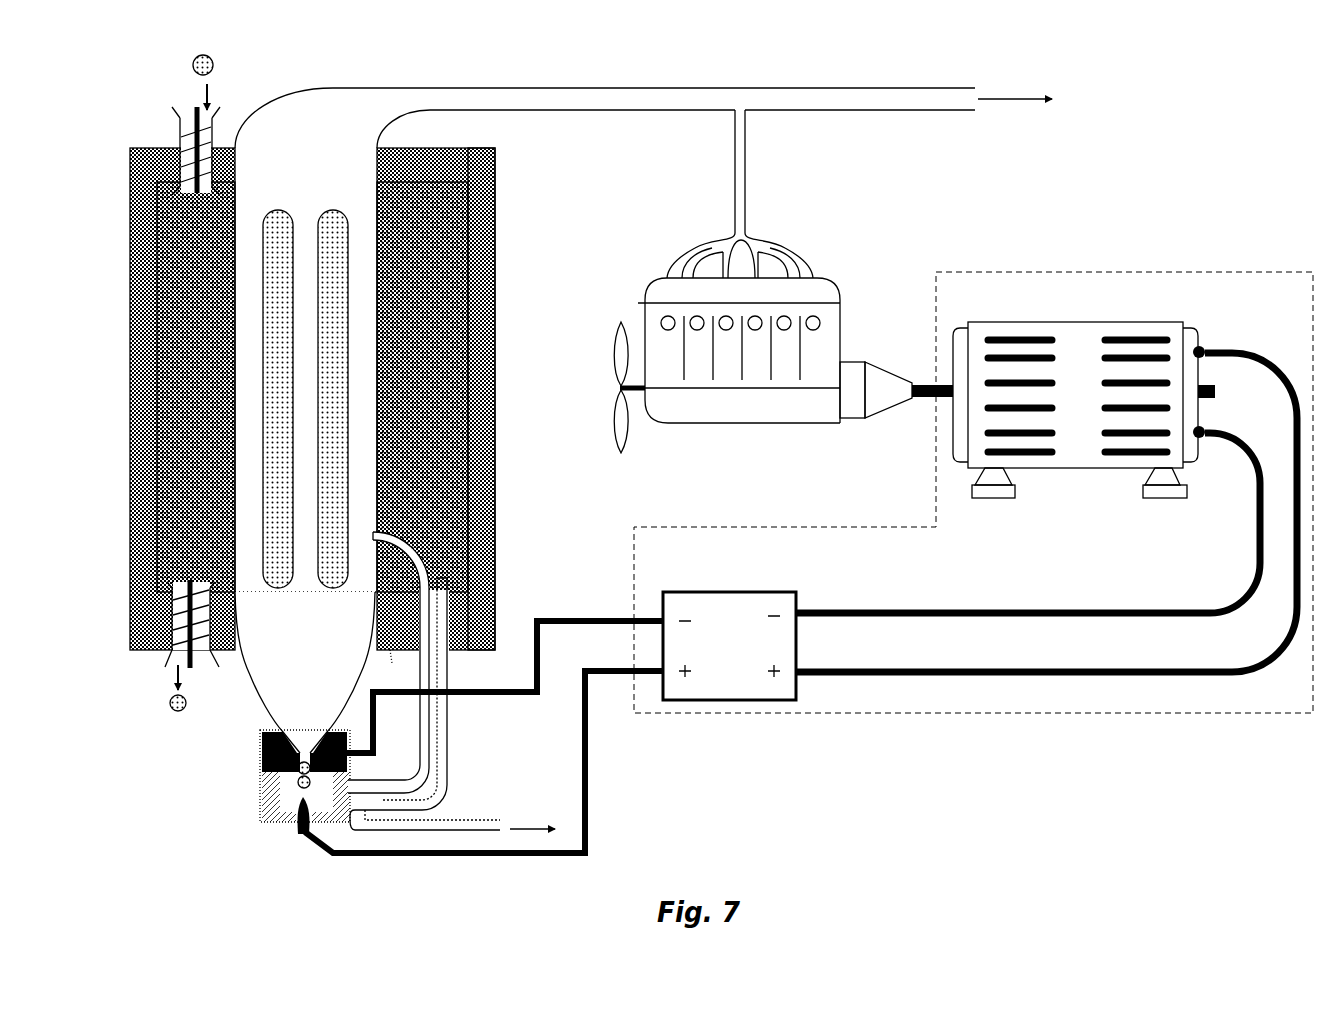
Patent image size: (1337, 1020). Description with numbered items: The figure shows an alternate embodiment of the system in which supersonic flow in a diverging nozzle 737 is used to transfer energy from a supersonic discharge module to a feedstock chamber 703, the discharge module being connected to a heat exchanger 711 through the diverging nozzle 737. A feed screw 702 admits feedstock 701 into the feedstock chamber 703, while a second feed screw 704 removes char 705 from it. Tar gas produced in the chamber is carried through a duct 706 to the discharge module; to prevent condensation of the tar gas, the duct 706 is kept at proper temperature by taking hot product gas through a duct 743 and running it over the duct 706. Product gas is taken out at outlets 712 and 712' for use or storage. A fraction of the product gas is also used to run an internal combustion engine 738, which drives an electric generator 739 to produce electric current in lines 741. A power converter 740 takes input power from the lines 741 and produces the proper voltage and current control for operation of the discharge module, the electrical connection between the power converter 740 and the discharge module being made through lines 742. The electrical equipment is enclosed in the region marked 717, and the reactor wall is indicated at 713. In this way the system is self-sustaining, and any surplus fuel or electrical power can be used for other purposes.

The feedstock 701 is at (214, 57).
The feed screw 702 is at (188, 113).
The feedstock chamber 703 is at (497, 493).
The feed screw 704 is at (195, 660).
The char 705 is at (179, 722).
The duct 706 is at (432, 735).
The heat exchanger 711 is at (357, 337).
The product gas outlet 712 is at (786, 141).
The product gas outlet 712' is at (452, 811).
The insulated wall 713 is at (490, 578).
The electrical system 717 is at (998, 714).
The diverging nozzle 737 is at (263, 693).
The internal combustion engine 738 is at (783, 347).
The electric generator 739 is at (1068, 318).
The power converter 740 is at (742, 585).
The lines 741 is at (1005, 665).
The lines 742 is at (573, 773).
The duct 743 is at (385, 666).